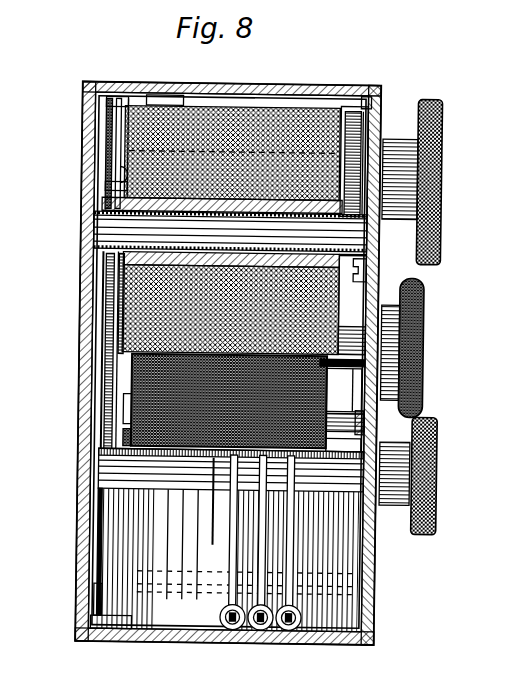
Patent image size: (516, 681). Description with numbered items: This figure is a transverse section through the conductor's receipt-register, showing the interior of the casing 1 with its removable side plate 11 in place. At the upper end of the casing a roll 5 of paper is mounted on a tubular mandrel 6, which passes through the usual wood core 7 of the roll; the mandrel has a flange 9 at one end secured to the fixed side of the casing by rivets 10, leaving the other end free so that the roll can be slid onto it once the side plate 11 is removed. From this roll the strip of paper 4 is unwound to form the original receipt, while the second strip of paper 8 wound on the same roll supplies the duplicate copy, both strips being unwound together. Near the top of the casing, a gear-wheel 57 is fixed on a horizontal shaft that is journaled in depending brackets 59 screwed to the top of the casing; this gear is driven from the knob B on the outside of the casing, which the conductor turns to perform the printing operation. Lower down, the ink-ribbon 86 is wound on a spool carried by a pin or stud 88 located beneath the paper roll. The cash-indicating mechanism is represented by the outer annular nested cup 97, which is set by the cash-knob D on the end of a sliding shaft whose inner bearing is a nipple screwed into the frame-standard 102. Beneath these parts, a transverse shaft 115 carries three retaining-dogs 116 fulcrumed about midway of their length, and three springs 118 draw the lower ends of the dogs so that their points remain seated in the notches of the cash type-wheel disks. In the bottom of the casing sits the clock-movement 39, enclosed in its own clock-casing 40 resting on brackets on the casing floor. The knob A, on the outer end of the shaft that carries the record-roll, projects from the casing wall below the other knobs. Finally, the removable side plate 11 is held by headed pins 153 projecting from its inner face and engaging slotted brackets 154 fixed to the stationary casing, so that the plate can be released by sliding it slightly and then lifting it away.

The casing 1 is at (294, 86).
The strip of paper 4 is at (231, 105).
The roll 5 is at (299, 126).
The tubular mandrel 6 is at (91, 234).
The wood core 7 is at (104, 270).
The strip of paper 8 is at (329, 107).
The flange 9 is at (366, 266).
The rivets 10 is at (368, 258).
The side plate 11 is at (97, 345).
The clock-movement 39 is at (227, 560).
The clock-casing 40 is at (114, 547).
The gear-wheel 57 is at (354, 116).
The depending brackets 59 is at (156, 101).
The ink-ribbon 86 is at (189, 451).
The pin or stud 88 is at (380, 421).
The annular nested cup 97 is at (109, 410).
The frame-standard 102 is at (111, 434).
The transverse shaft 115 is at (217, 489).
The retaining-dogs 116 is at (292, 557).
The springs 118 is at (244, 629).
The headed pins 153 is at (100, 114).
The slotted brackets 154 is at (106, 97).
The knob A is at (441, 467).
The knob B is at (440, 139).
The cash-knob D is at (424, 327).